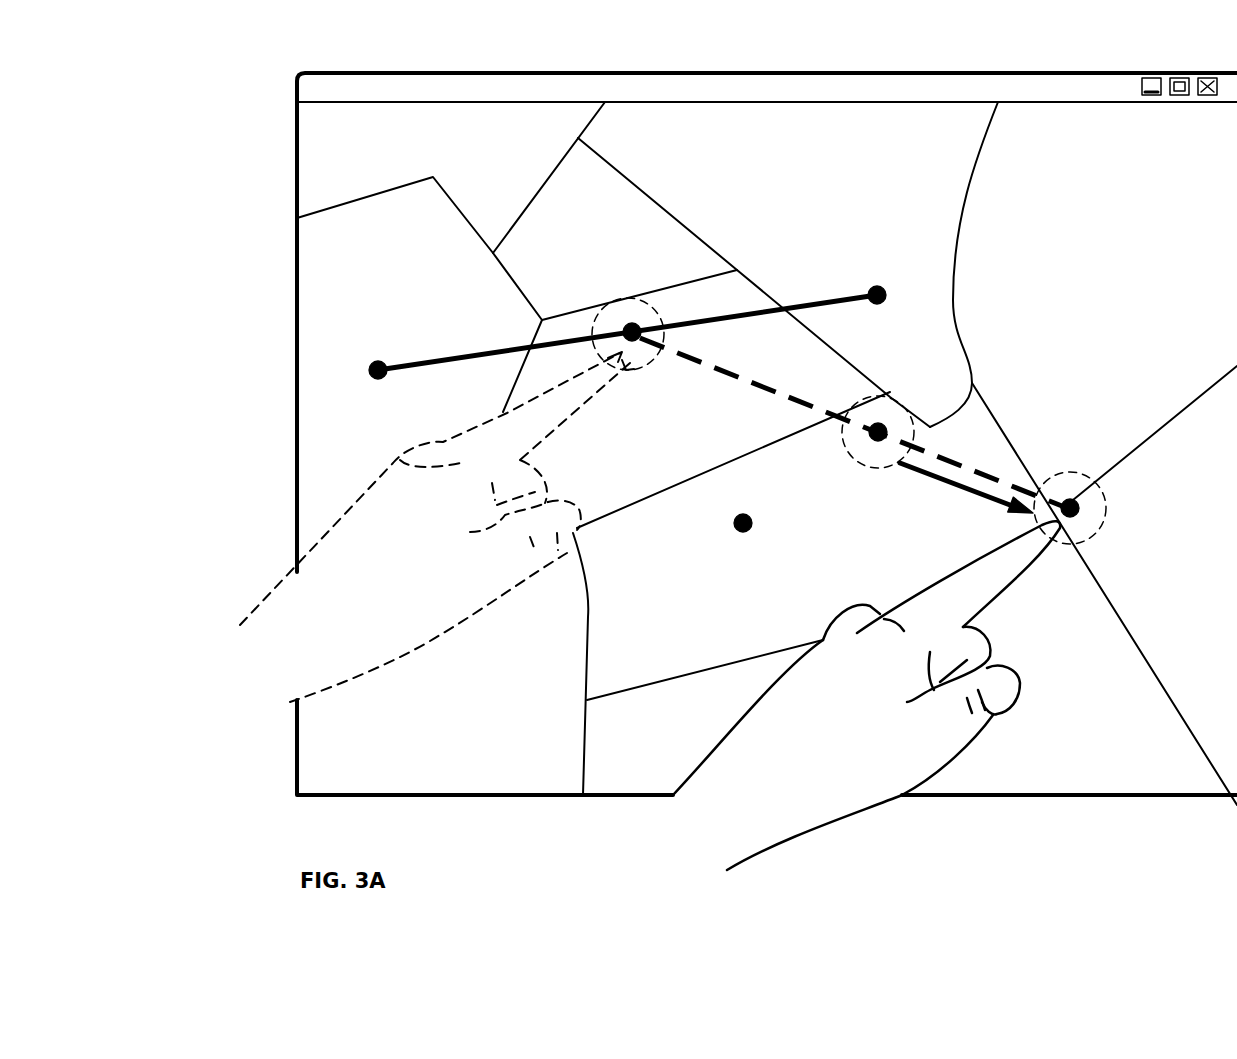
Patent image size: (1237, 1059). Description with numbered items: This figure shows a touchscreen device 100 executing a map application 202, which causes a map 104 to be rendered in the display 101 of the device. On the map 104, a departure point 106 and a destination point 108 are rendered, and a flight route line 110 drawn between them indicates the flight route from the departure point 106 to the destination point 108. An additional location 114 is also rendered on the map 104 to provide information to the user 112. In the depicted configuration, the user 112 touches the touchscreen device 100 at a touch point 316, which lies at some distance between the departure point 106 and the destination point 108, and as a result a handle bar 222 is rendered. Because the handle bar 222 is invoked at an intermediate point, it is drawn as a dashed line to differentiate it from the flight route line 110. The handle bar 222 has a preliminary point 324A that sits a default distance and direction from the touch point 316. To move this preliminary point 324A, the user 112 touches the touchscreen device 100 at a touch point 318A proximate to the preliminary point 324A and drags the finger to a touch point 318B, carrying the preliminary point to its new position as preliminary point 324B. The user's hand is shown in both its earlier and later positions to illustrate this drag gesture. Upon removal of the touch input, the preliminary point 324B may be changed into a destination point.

The touchscreen device 100 is at (268, 74).
The display 101 is at (314, 143).
The map 104 is at (1141, 169).
The departure point 106 is at (370, 364).
The destination point 108 is at (876, 291).
The flight route line 110 is at (766, 312).
The user 112 is at (397, 637).
The location 114 is at (753, 517).
The map application 202 is at (880, 97).
The handle bar 222 is at (678, 382).
The touch point 316 is at (620, 300).
The touch point 318A is at (872, 470).
The touch point 318B is at (1057, 478).
The preliminary point 324A is at (885, 422).
The preliminary point 324B is at (1084, 507).